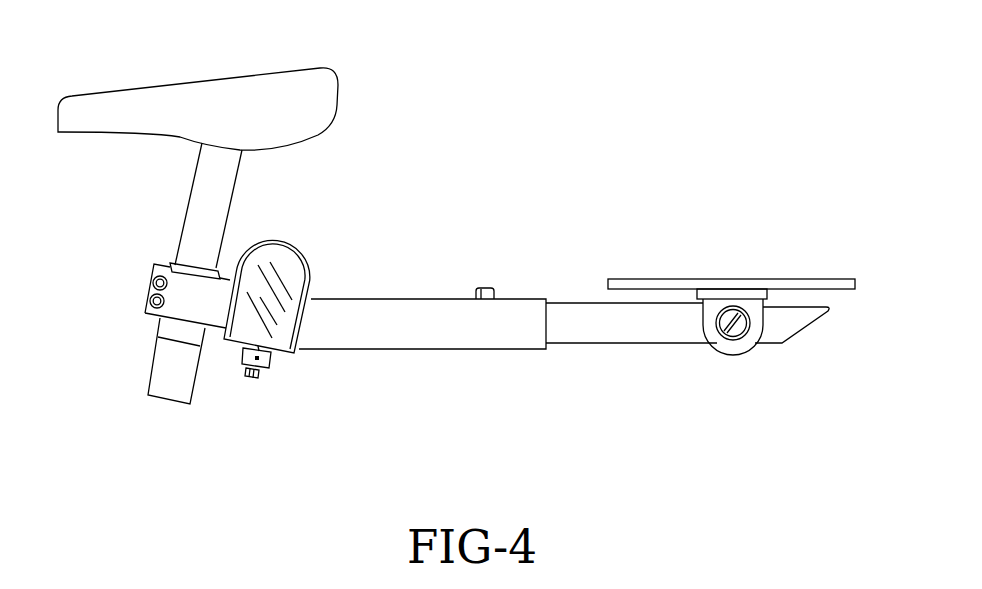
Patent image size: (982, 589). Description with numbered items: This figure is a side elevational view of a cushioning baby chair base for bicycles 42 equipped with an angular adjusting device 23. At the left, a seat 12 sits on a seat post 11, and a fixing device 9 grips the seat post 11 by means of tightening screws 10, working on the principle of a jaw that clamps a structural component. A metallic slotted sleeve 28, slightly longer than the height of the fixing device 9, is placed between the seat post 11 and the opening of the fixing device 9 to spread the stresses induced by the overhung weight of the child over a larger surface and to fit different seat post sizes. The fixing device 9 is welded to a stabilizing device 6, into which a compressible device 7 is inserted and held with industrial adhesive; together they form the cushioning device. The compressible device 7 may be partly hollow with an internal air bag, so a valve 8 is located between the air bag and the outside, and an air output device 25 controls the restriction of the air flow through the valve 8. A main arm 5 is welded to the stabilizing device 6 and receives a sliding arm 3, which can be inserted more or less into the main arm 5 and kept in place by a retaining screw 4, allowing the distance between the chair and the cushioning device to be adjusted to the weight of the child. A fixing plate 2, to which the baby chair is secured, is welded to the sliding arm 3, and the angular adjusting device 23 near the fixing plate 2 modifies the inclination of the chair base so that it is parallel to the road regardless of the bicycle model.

The fixing plate 2 is at (742, 282).
The sliding arm 3 is at (605, 333).
The retaining screw 4 is at (473, 285).
The main arm 5 is at (392, 341).
The stabilizing device 6 is at (302, 258).
The compressible device 7 is at (292, 282).
The valve 8 is at (266, 367).
The fixing device 9 is at (148, 313).
The tightening screws 10 is at (151, 279).
The seat post 11 is at (200, 222).
The seat 12 is at (300, 80).
The angular adjusting device 23 is at (742, 337).
The air output device 25 is at (258, 380).
The metallic slotted sleeve 28 is at (162, 340).
The cushioning baby chair base for bicycles 42 is at (602, 142).